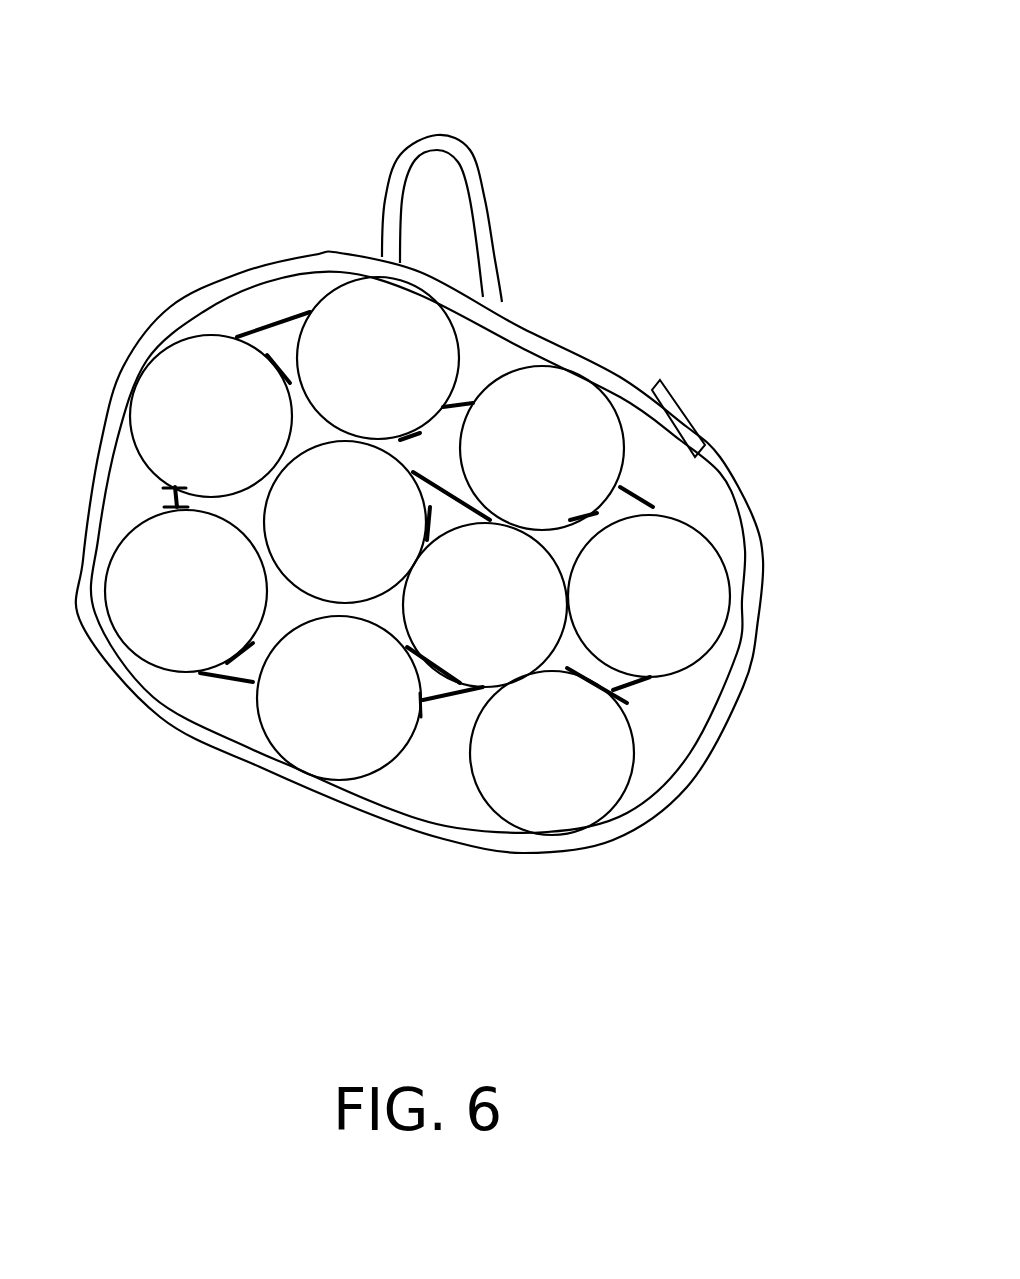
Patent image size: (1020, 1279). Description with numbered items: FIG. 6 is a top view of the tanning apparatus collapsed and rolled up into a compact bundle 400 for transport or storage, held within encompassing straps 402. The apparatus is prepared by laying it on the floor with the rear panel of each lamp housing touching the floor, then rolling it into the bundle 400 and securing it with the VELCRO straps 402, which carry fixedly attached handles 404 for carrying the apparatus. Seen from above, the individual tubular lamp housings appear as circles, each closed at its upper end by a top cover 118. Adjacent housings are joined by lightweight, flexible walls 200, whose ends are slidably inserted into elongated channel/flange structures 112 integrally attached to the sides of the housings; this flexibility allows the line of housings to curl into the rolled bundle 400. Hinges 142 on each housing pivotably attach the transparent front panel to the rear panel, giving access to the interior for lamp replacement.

The bundle 400 is at (142, 138).
The straps 402 is at (735, 475).
The handles 404 is at (482, 225).
The channel/flange structures 112 is at (190, 673).
The top cover 118 is at (562, 790).
The hinges 142 is at (242, 647).
The walls 200 is at (443, 693).